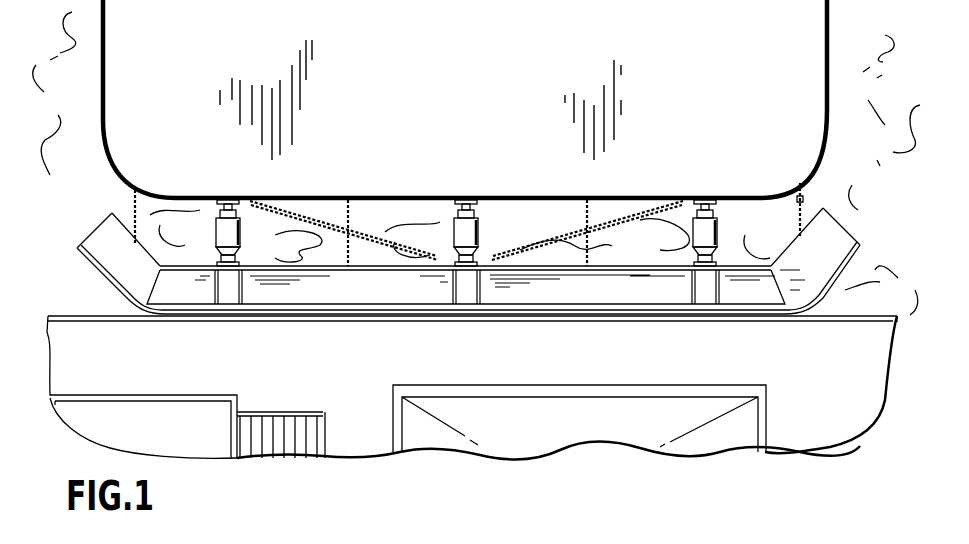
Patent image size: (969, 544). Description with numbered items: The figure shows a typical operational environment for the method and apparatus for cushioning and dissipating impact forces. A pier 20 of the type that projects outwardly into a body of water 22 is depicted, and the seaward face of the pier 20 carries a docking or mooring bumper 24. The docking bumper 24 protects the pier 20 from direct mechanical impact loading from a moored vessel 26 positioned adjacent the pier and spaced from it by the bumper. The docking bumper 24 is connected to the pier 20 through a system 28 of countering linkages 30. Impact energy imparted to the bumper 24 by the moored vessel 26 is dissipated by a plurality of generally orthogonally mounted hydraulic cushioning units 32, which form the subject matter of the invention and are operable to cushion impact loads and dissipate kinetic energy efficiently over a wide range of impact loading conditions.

The pier 20 is at (480, 80).
The body of water 22 is at (87, 162).
The docking bumper 24 is at (852, 240).
The moored vessel 26 is at (471, 359).
The system of countering linkages 28 is at (814, 196).
The countering linkages 30 is at (138, 196).
The hydraulic cushioning units 32 is at (218, 208).